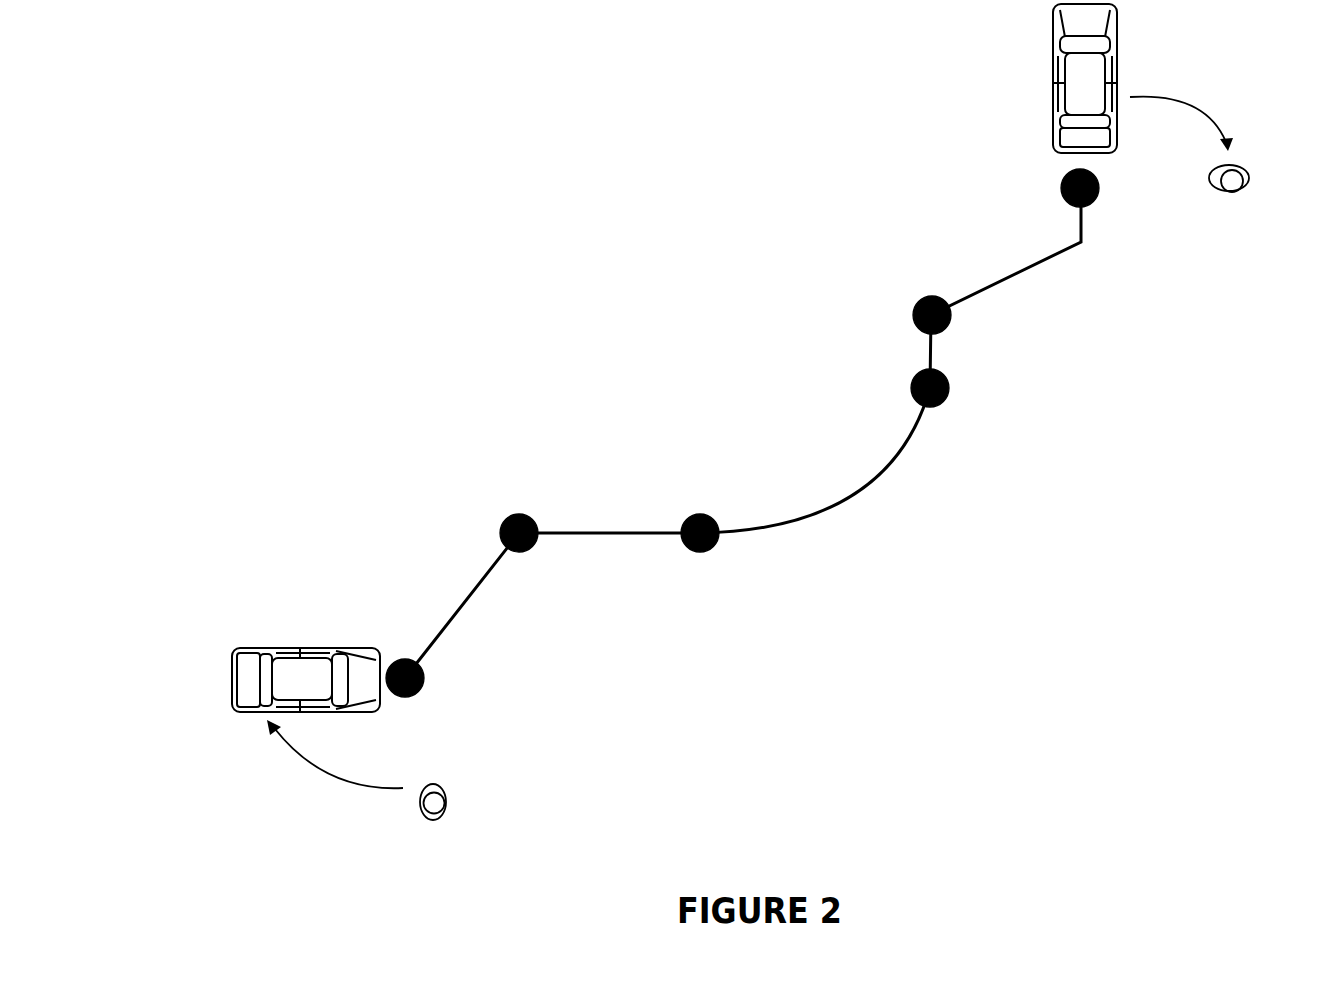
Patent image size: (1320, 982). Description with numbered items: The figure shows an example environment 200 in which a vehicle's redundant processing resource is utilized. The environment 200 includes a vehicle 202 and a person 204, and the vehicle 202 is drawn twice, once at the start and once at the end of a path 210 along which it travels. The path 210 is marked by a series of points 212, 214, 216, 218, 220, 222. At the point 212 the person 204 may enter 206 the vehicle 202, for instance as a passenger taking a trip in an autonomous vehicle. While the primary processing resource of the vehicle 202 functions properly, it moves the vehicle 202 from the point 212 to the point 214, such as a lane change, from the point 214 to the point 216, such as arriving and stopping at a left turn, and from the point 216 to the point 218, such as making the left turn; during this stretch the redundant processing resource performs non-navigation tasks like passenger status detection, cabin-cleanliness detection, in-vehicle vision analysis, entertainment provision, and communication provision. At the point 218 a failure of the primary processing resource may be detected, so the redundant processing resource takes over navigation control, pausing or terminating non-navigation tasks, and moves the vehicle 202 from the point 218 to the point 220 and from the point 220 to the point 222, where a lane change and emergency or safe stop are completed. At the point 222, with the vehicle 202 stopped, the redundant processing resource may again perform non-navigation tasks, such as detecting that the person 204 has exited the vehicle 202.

The environment 200 is at (333, 151).
The vehicle 202 is at (1053, 96).
The person 204 is at (1227, 192).
The entering of the vehicle 206 is at (335, 767).
The path 210 is at (867, 487).
The point 212 is at (423, 684).
The point 214 is at (536, 540).
The point 216 is at (718, 542).
The point 218 is at (948, 393).
The point 220 is at (950, 327).
The point 222 is at (1098, 196).